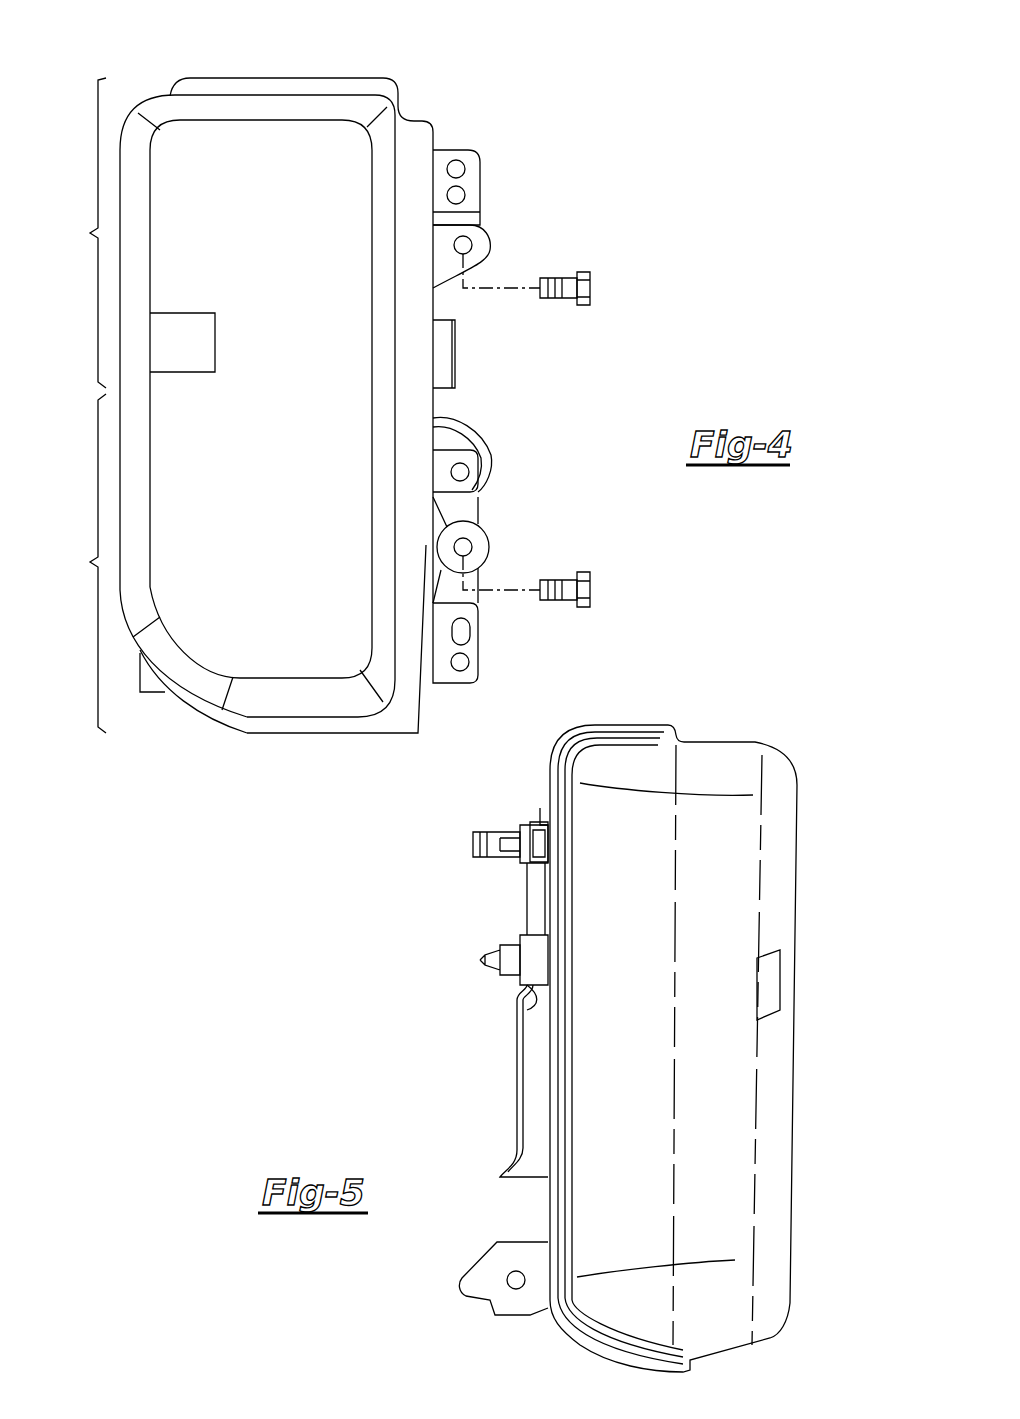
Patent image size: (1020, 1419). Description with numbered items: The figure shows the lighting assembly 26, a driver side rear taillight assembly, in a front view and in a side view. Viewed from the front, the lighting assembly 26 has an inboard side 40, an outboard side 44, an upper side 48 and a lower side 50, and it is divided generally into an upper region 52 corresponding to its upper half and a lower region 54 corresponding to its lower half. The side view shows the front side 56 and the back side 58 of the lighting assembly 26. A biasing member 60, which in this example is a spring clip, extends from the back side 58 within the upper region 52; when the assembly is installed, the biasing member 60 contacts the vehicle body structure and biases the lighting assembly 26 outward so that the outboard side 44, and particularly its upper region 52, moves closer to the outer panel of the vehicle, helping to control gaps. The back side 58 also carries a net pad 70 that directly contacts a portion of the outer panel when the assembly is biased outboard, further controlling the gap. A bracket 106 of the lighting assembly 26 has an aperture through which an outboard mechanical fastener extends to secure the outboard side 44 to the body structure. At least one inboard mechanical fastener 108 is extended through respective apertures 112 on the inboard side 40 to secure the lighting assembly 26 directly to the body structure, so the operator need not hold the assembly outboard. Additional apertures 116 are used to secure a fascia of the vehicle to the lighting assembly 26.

In FIG. 4, the lighting assembly 26 is at (452, 124).
In FIG. 5, the lighting assembly 26 is at (830, 793).
In FIG. 4, the inboard side 40 is at (487, 365).
In FIG. 4, the outboard side 44 is at (80, 305).
In FIG. 5, the outboard side 44 is at (628, 1073).
In FIG. 4, the upper side 48 is at (258, 62).
In FIG. 5, the upper side 48 is at (745, 728).
In FIG. 4, the lower side 50 is at (258, 746).
In FIG. 5, the lower side 50 is at (770, 1348).
In FIG. 4, the upper region 52 is at (85, 233).
In FIG. 4, the lower region 54 is at (85, 563).
In FIG. 5, the front side 56 is at (805, 1053).
In FIG. 5, the back side 58 is at (490, 1068).
In FIG. 5, the biasing member 60 is at (473, 842).
In FIG. 5, the net pad 70 is at (537, 855).
In FIG. 5, the bracket 106 is at (515, 1303).
In FIG. 4, the inboard mechanical fastener 108 is at (584, 272).
In FIG. 4, the apertures 112 is at (466, 545).
In FIG. 4, the additional apertures 116 is at (464, 665).